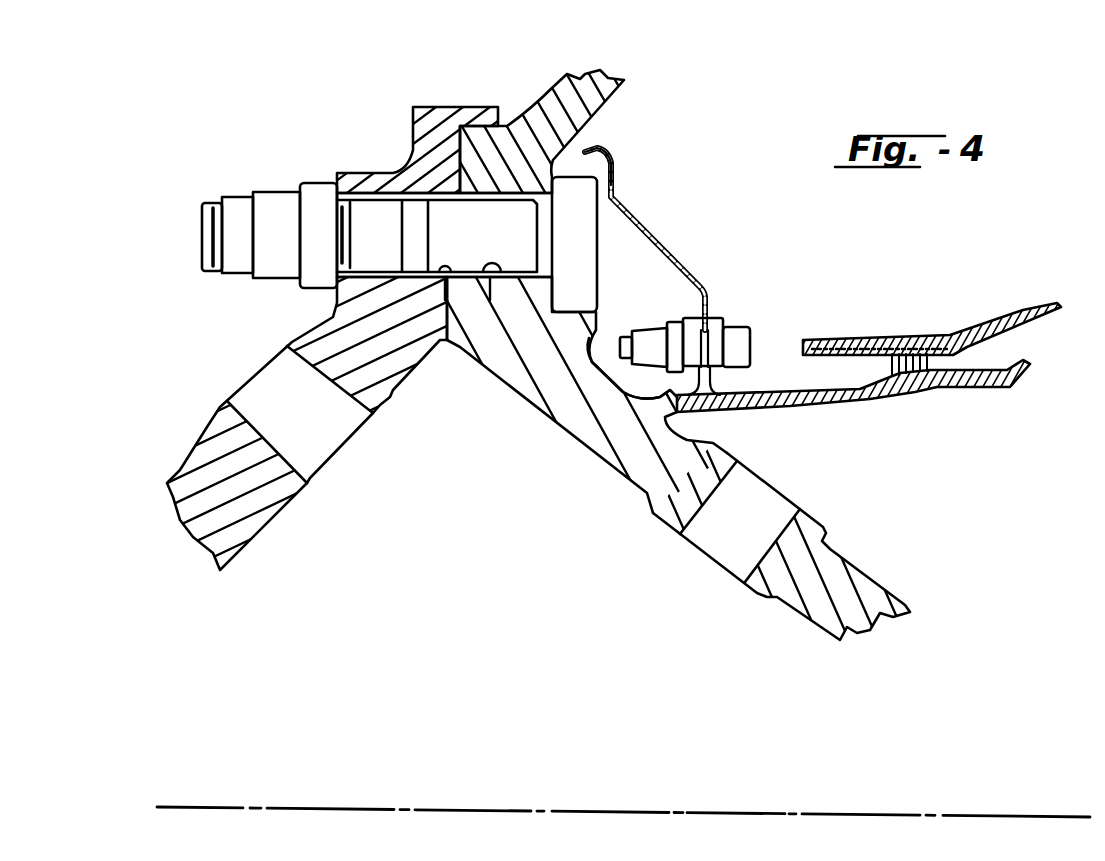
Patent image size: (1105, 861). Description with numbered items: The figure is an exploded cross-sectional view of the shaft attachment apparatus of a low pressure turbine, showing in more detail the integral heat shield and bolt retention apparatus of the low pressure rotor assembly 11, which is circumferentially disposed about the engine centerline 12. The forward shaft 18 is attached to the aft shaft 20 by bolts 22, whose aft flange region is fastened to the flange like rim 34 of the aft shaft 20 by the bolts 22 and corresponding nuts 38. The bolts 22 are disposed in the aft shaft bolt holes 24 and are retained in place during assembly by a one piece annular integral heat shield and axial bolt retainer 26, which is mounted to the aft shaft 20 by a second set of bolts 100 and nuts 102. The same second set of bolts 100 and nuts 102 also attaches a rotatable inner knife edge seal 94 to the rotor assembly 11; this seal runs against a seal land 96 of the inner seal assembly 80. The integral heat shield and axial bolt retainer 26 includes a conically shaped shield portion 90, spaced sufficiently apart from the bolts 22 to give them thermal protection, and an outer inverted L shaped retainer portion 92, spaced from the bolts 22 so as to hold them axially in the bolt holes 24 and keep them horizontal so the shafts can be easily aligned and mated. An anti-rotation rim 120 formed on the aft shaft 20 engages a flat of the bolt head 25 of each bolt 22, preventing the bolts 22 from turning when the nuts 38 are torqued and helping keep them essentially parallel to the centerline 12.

The low pressure rotor assembly 11 is at (497, 470).
The engine centerline 12 is at (446, 808).
The forward shaft 18 is at (195, 455).
The aft shaft 20 is at (566, 73).
The bolts 22 is at (490, 250).
The aft shaft bolt holes 24 is at (497, 349).
The bolt head 25 is at (607, 200).
The integral heat shield and axial bolt retainer 26 is at (712, 312).
The flange like rim 34 is at (414, 108).
The nuts 38 is at (277, 186).
The inner seal assembly 80 is at (1023, 312).
The shield portion 90 is at (672, 251).
The retainer portion 92 is at (613, 172).
The inner knife edge seal 94 is at (841, 404).
The seal land 96 is at (850, 354).
The second set of bolts 100 is at (751, 337).
The nuts 102 is at (708, 298).
The anti-rotation rim 120 is at (590, 334).